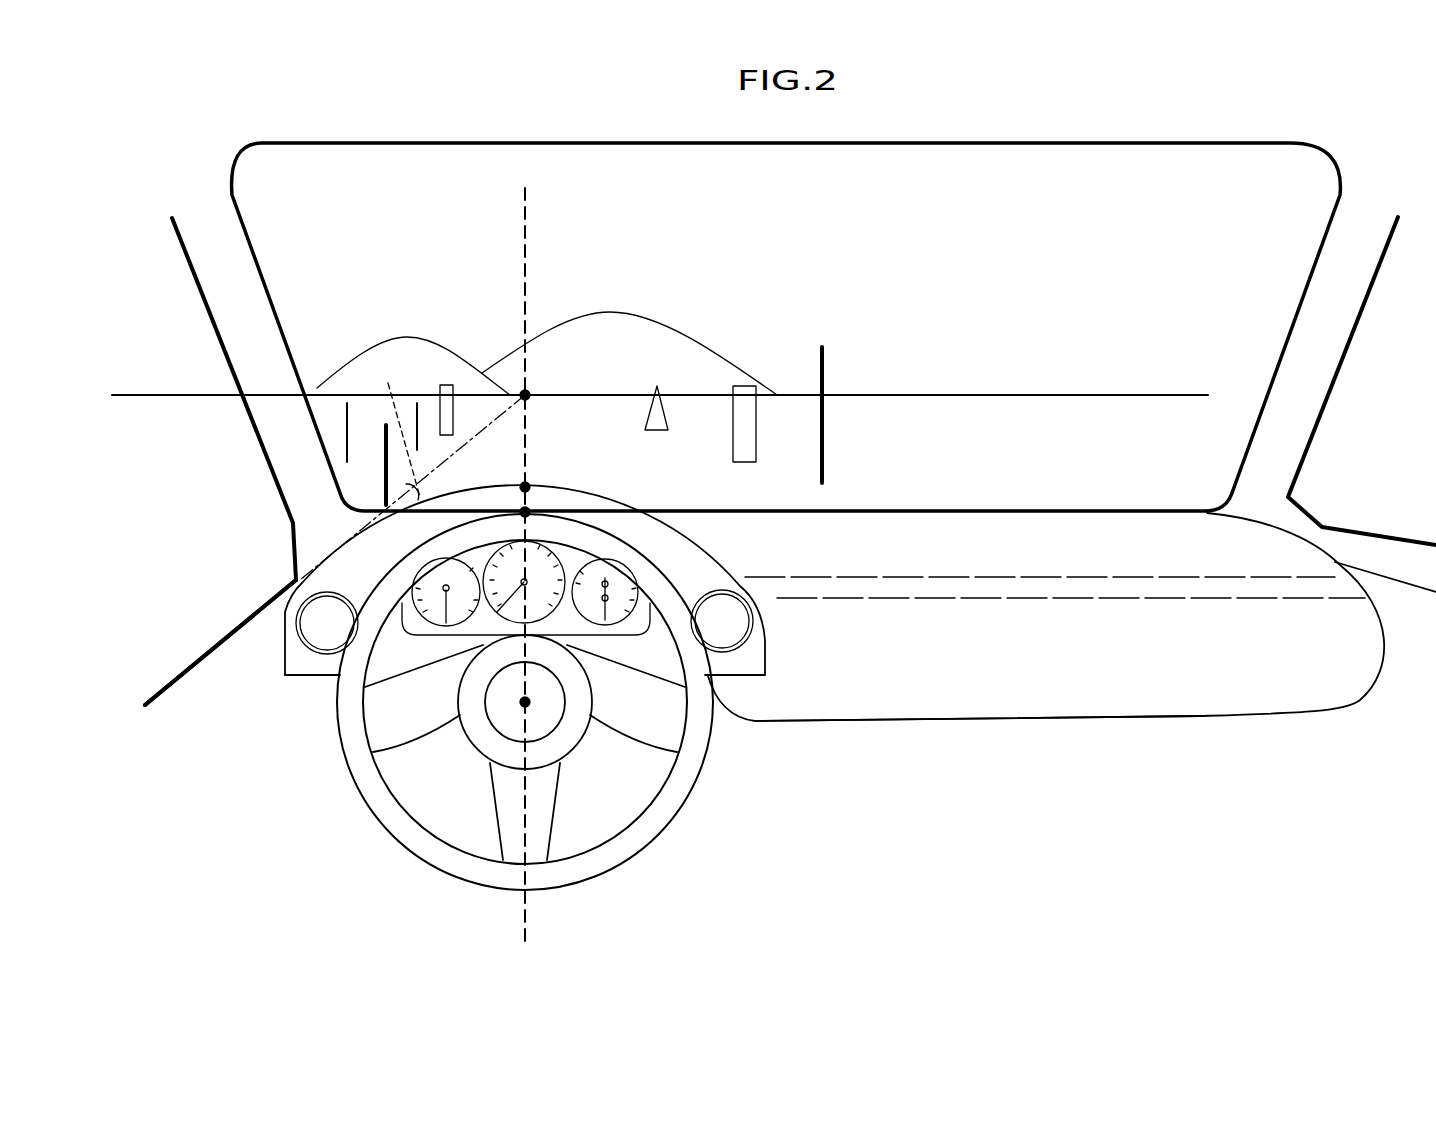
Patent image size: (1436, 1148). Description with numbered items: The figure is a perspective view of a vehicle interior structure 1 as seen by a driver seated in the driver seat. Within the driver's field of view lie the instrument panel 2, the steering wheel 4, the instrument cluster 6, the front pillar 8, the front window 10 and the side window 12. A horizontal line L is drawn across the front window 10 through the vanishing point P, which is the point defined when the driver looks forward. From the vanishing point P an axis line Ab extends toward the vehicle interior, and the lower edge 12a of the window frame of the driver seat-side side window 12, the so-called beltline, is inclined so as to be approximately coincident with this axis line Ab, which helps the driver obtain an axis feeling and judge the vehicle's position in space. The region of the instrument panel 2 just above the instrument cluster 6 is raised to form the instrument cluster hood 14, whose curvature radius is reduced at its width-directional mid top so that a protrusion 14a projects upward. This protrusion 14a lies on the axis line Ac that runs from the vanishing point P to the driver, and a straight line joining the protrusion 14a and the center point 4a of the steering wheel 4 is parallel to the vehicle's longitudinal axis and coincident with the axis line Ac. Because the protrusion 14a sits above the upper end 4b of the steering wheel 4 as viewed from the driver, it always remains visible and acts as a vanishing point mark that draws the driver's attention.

The vehicle interior structure 1 is at (1028, 810).
The instrument panel 2 is at (1020, 533).
The steering wheel 4 is at (675, 790).
The center point of the steering wheel 4a is at (522, 706).
The upper end of the steering wheel 4b is at (522, 510).
The instrument cluster 6 is at (573, 558).
The front pillar 8 is at (228, 297).
The front window 10 is at (781, 258).
The side window 12 is at (192, 515).
The lower edge of the window frame 12a is at (185, 688).
The instrument cluster hood 14 is at (550, 503).
The protrusion 14a is at (520, 487).
The vanishing point P is at (530, 391).
The horizontal line of sight L is at (1160, 392).
The axis line Ab is at (394, 427).
The axis line Ac is at (530, 918).